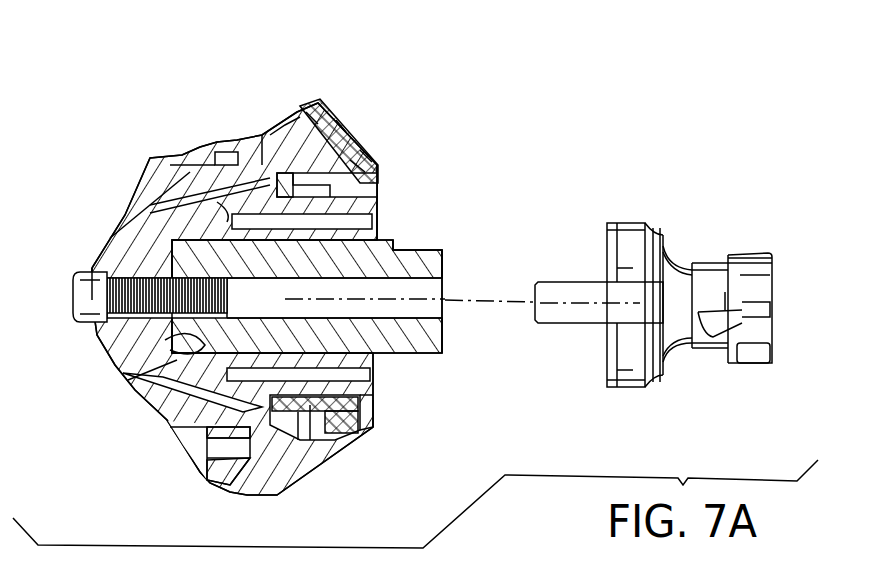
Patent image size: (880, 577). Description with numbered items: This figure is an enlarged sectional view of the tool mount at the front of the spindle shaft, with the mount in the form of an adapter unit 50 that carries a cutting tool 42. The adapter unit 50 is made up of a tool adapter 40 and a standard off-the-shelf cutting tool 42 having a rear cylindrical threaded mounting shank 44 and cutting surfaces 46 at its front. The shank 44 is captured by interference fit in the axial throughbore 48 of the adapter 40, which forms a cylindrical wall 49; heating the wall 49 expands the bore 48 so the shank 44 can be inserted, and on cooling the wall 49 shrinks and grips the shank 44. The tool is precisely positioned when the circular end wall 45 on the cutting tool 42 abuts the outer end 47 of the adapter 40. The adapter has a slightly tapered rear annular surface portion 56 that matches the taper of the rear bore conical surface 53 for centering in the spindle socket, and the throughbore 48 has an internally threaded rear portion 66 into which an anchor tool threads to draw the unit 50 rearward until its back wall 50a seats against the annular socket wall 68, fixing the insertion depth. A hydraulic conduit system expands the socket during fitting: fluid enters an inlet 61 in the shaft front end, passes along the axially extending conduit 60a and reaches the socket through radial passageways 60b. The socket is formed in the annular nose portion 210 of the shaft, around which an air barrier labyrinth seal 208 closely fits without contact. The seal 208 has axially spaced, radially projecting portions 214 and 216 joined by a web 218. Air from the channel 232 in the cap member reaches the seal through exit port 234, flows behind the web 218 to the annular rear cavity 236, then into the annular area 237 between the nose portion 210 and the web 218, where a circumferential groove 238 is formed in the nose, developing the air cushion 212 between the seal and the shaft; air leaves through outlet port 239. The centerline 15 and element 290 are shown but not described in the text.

The axis / centerline 15 is at (462, 299).
The tool adapter 40 is at (428, 216).
The cutting tool 42 is at (689, 267).
The mounting shank 44 is at (570, 295).
The circular end wall 45 is at (608, 255).
The cutting surfaces 46 is at (782, 328).
The outer end 47 is at (443, 260).
The axial throughbore 48 is at (409, 251).
The cylindrical wall 49 is at (409, 247).
The adapter unit 50 is at (381, 238).
The back wall 50a is at (100, 260).
The bore conical surface 53 is at (128, 380).
The rear annular surface portion 56 is at (170, 395).
The axially extending conduit 60a is at (233, 145).
The radial passageways 60b is at (170, 187).
The inlet 61 is at (382, 205).
The internally threaded rear portion 66 is at (229, 297).
The annular socket wall 68 is at (165, 340).
The air barrier labyrinth seal 208 is at (380, 200).
The annular nose portion 210 is at (375, 390).
The air cushion 212 is at (373, 400).
The rear radially projecting portion 214 is at (298, 412).
The front radially projecting portion 216 is at (372, 400).
The web 218 is at (325, 125).
The axial and radial air channel 232 is at (300, 117).
The exit port 234 is at (365, 143).
The annular rear cavity 236 is at (376, 165).
The annular area 237 is at (313, 110).
The circumferential groove 238 is at (341, 195).
The outlet port 239 is at (372, 402).
The seal element 290 is at (308, 405).